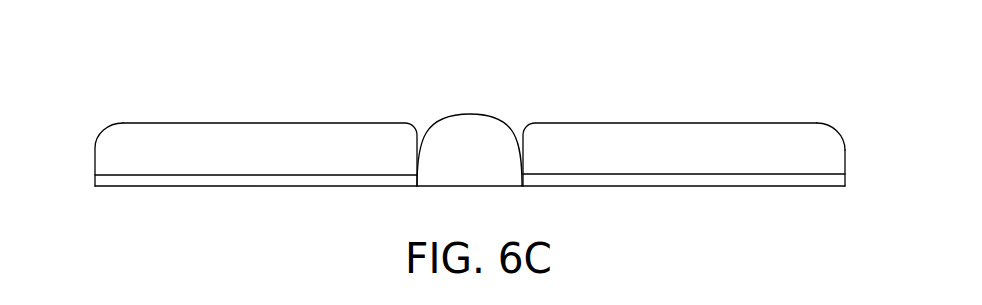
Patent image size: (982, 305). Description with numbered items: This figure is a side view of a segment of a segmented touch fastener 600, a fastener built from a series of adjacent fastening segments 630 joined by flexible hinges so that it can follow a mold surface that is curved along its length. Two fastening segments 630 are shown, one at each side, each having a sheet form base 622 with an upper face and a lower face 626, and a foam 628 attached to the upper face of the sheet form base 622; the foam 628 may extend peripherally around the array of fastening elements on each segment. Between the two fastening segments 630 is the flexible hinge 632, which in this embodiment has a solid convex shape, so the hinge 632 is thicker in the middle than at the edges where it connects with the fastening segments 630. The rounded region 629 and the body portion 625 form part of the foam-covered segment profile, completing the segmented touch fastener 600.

The segmented touch fastener 600 is at (628, 53).
The sheet form base 622 is at (565, 180).
The second encapsulant body portion 625 is at (600, 133).
The lower face 626 is at (812, 187).
The foam 628 is at (287, 133).
The rounded corner edge 629 is at (732, 173).
The fastening segment 630 is at (92, 135).
The flexible hinge 632 is at (459, 127).